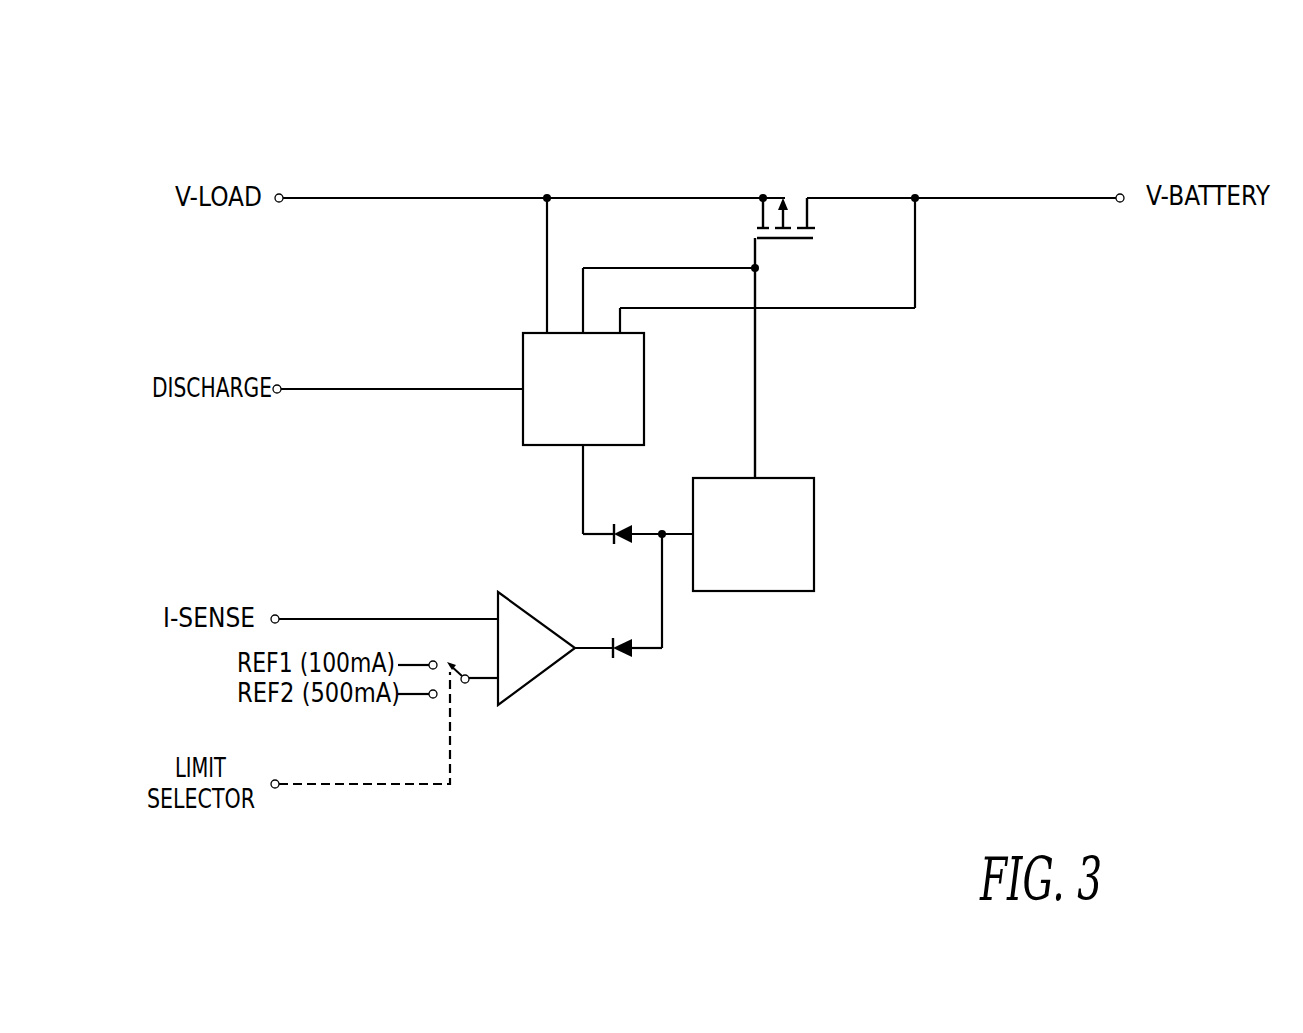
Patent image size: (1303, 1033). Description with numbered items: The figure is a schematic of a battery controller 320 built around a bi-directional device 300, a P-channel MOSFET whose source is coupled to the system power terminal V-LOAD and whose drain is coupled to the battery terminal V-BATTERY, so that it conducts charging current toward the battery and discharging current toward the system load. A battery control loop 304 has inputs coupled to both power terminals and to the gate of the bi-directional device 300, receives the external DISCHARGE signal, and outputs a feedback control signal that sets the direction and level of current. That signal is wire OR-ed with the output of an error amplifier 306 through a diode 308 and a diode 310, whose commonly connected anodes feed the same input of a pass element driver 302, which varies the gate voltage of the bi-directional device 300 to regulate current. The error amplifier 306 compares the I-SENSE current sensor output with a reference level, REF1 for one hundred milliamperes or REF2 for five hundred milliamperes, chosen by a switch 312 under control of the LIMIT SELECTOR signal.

The bi-directional device 300 is at (790, 240).
The pass element driver 302 is at (814, 536).
The battery control loop 304 is at (523, 350).
The error amplifier 306 is at (538, 619).
The diode 308 is at (623, 547).
The diode 310 is at (624, 667).
The switch 312 is at (457, 683).
The battery controller 320 is at (552, 84).